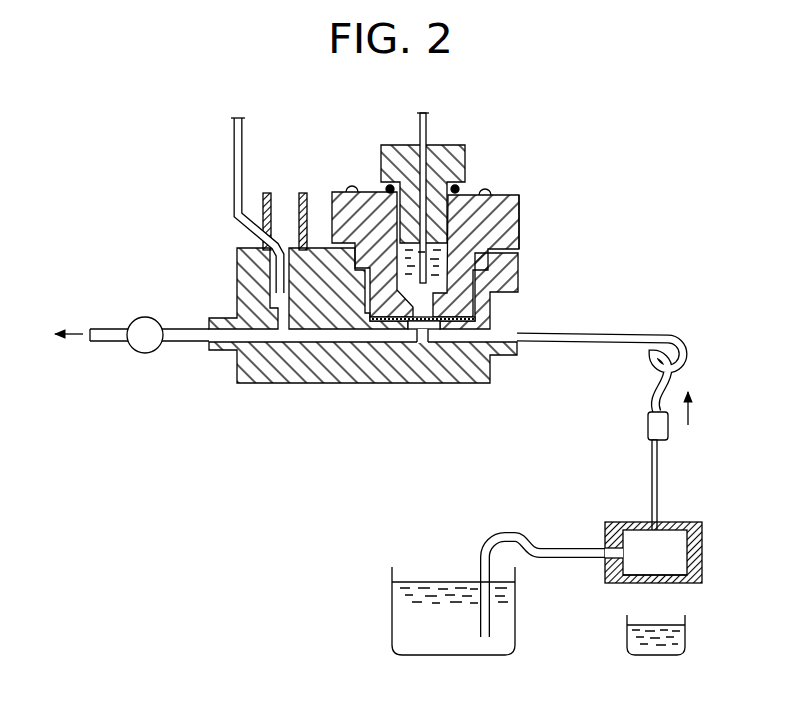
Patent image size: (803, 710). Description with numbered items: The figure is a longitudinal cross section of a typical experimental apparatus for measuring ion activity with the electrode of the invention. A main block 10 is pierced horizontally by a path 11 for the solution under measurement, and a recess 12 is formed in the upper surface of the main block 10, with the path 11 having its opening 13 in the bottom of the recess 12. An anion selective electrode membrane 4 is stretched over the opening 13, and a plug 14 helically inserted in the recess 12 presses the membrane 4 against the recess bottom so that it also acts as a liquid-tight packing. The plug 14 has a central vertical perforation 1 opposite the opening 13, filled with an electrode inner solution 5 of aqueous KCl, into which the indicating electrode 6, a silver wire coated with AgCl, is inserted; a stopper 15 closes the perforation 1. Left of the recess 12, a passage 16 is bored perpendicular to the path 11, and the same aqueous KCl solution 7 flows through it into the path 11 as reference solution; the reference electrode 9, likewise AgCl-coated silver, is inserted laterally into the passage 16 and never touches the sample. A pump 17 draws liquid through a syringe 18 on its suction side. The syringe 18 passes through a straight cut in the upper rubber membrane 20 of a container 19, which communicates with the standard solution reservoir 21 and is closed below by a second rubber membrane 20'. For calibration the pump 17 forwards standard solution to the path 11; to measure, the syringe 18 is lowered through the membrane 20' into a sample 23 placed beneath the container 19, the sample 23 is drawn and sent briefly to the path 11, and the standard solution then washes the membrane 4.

The vertical perforation 1 is at (342, 202).
The anion selective electrode membrane 4 is at (418, 312).
The electrode inner solution 5 is at (518, 202).
The indicating electrode 6 is at (428, 128).
The aqueous KCl solution 7 is at (280, 186).
The reference electrode 9 is at (233, 172).
The main block 10 is at (303, 384).
The path 11 is at (358, 338).
The recess 12 is at (480, 300).
The opening 13 is at (428, 330).
The plug 14 is at (505, 197).
The stopper 15 is at (391, 150).
The passage 16 is at (273, 280).
The pump 17 is at (139, 353).
The syringe 18 is at (652, 473).
The container 19 is at (603, 533).
The rubber membrane 20 is at (661, 527).
The rubber membrane 20' is at (684, 600).
The standard solution reservoir 21 is at (392, 613).
The sample 23 is at (627, 637).